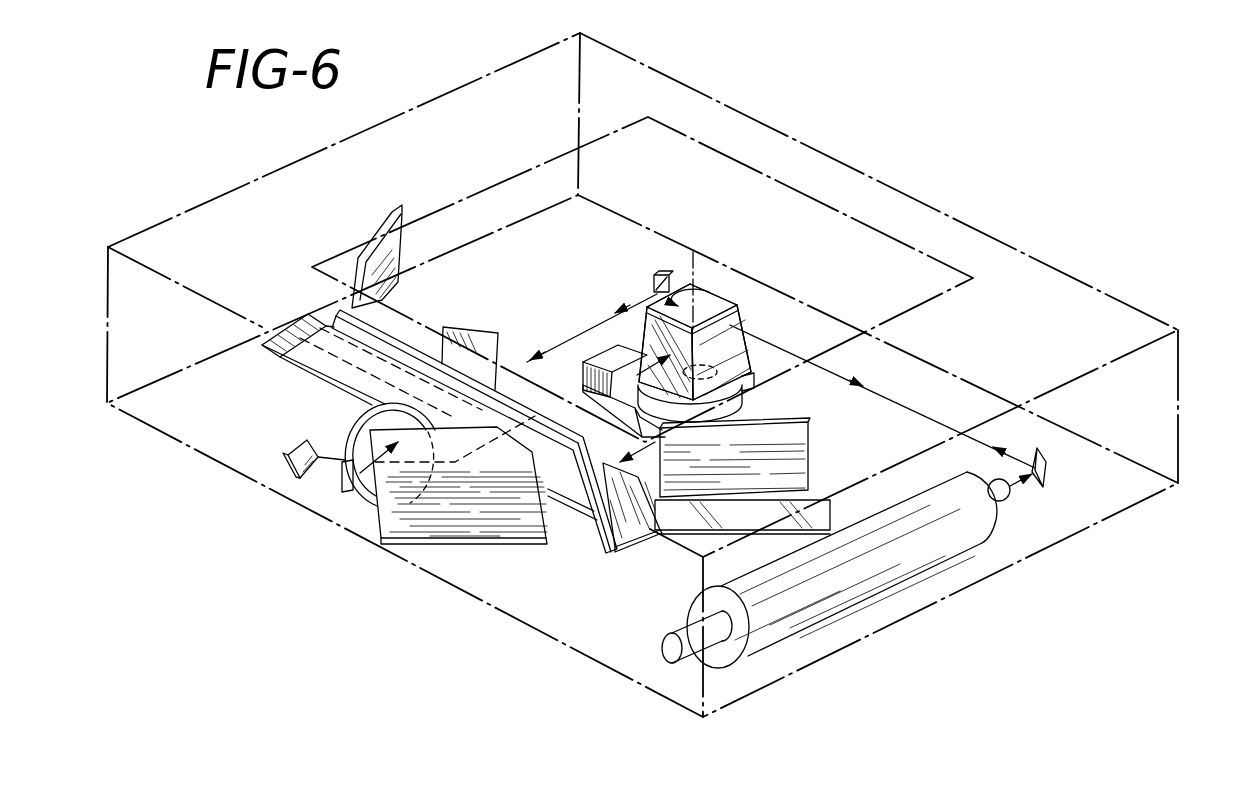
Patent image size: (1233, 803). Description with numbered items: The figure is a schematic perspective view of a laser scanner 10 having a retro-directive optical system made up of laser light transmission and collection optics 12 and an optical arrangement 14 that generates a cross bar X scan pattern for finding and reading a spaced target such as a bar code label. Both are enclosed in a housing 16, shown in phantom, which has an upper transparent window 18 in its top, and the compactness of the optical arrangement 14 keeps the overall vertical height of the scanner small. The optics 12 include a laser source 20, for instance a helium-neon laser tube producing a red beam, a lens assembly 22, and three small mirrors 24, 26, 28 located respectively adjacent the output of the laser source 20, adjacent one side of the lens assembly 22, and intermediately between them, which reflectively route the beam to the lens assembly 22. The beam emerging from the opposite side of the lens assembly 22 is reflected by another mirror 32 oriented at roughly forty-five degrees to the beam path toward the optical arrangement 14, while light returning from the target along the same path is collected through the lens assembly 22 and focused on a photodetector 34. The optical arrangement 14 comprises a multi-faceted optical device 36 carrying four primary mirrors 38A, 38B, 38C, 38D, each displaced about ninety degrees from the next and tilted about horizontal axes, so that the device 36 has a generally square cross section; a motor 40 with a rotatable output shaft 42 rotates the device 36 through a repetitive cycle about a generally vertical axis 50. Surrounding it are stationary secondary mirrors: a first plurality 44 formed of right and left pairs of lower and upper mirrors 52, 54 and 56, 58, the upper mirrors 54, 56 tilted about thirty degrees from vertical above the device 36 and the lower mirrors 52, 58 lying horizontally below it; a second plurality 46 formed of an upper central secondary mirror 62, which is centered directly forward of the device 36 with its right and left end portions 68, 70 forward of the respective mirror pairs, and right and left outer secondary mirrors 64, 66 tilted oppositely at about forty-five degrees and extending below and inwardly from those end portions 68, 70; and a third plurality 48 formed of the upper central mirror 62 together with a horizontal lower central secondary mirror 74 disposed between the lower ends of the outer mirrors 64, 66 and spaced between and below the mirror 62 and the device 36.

The laser scanner 10 is at (670, 375).
The laser light transmission and collection optics 12 is at (323, 500).
The optical arrangement 14 is at (513, 347).
The housing 16 is at (1180, 407).
The upper transparent window 18 is at (857, 220).
The laser source 20 is at (880, 572).
The lens assembly 22 is at (363, 491).
The small mirror 24 is at (1046, 470).
The small mirror 26 is at (357, 423).
The small mirror 28 is at (663, 273).
The mirror 32 is at (458, 524).
The photodetector 34 is at (288, 457).
The multi-faceted optical device 36 is at (698, 321).
The primary mirror 38A is at (612, 318).
The primary mirror 38B is at (727, 320).
The primary mirror 38C is at (737, 280).
The primary mirror 38D is at (638, 298).
The motor 40 is at (742, 400).
The rotatable output shaft 42 is at (772, 337).
The first plurality of secondary mirrors 44 is at (853, 502).
The second plurality of secondary mirrors 46 is at (474, 431).
The third plurality of secondary mirrors 48 is at (761, 457).
The vertical axis 50 is at (710, 267).
The lower secondary mirror 52 is at (473, 327).
The upper secondary mirror 54 is at (402, 205).
The upper secondary mirror 56 is at (808, 422).
The lower secondary mirror 58 is at (720, 515).
The upper central secondary mirror 62 is at (413, 343).
The right outer secondary mirror 64 is at (415, 390).
The left outer secondary mirror 66 is at (626, 527).
The right end portion 68 is at (353, 342).
The left end portion 70 is at (530, 470).
The lower central secondary mirror 74 is at (616, 461).